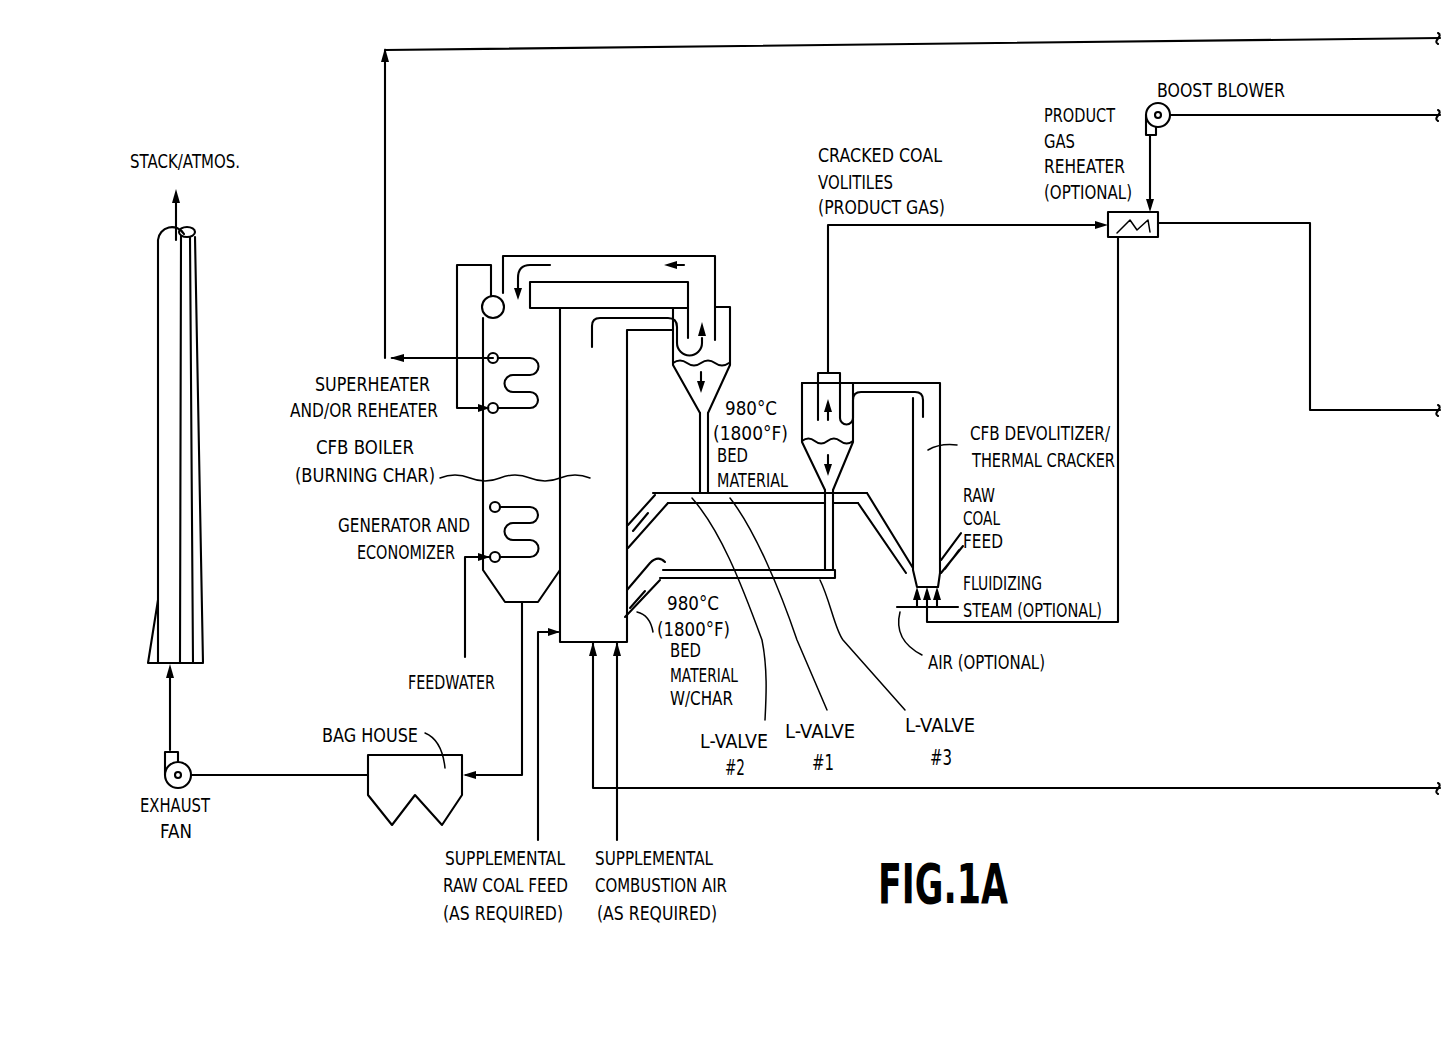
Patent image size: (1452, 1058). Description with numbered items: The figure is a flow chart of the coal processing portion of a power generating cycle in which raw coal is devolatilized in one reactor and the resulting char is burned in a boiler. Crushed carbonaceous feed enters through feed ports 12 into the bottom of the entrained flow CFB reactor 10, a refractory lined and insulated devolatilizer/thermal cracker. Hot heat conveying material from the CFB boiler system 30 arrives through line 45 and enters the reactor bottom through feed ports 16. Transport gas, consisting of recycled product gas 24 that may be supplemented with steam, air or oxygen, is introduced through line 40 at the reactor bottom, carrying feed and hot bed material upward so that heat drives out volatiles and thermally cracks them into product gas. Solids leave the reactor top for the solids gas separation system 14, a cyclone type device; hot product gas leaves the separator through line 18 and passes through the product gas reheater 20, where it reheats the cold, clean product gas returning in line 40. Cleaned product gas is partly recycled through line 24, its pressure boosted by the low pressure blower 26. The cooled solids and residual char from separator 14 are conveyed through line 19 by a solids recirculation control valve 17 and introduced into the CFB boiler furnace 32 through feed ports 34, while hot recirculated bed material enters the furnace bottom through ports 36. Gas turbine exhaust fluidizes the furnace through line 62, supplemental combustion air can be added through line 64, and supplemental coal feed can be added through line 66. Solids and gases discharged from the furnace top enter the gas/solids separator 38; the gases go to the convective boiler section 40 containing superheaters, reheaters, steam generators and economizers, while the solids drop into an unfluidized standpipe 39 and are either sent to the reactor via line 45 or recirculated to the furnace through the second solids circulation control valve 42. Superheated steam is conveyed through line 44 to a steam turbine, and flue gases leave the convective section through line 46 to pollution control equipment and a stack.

The entrained flow CFB reactor 10 is at (933, 403).
The feed ports 12 is at (957, 557).
The solids gas separation system 14 is at (862, 380).
The feed ports 16 is at (882, 532).
The solids recirculation control valve 17 is at (835, 575).
The product gas line 18 is at (980, 222).
The solids conveying line 19 is at (637, 567).
The product gas reheater 20 is at (1150, 237).
The recycled product gas line 24 is at (1287, 115).
The low pressure blower 26 is at (1150, 107).
The CFB boiler system 30 is at (560, 340).
The CFB boiler furnace 32 is at (613, 357).
The feed ports 34 is at (625, 639).
The ports 36 is at (643, 503).
The gas/solids separator 38 is at (723, 302).
The unfluidized standpipe 39 is at (693, 463).
The convective boiler section / fluidizing gas line 40 is at (522, 340).
The second solids circulation control valve 42 is at (692, 498).
The superheated steam line 44 is at (385, 152).
The hot solids feed line 45 is at (777, 500).
The flue gas line 46 is at (523, 708).
The gas turbine exhaust line 62 is at (703, 788).
The supplemental combustion air line 64 is at (617, 690).
The supplemental coal feed line 66 is at (539, 757).